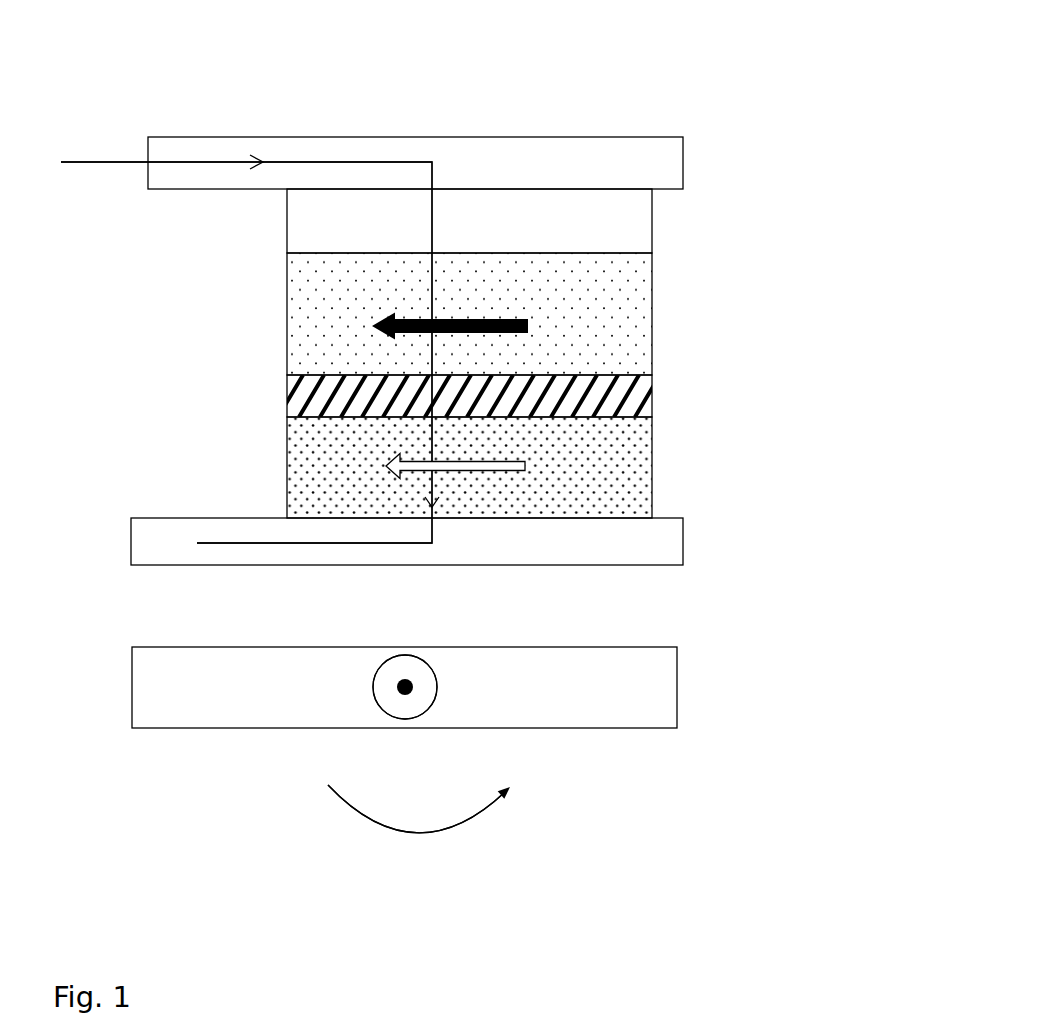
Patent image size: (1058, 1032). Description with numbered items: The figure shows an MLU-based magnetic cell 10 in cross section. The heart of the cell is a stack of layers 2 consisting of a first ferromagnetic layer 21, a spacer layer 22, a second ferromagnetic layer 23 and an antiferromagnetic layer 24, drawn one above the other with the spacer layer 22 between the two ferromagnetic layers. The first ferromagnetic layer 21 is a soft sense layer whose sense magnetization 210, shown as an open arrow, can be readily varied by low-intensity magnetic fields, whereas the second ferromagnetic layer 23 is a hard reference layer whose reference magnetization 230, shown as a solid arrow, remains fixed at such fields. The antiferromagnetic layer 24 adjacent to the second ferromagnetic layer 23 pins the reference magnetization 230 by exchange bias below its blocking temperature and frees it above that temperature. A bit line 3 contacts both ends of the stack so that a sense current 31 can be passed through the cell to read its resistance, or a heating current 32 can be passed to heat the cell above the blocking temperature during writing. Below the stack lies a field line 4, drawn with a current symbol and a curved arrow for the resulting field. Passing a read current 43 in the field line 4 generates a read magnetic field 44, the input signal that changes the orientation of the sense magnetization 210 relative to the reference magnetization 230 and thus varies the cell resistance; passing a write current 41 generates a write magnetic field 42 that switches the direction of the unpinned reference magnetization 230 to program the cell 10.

The MLU-based magnetic cell 10 is at (812, 71).
The bit line 3 is at (571, 155).
The sense current 31 is at (102, 162).
The heating current 32 is at (246, 352).
The magnetic tunnel junction stack 2 is at (561, 353).
The antiferromagnetic layer 24 is at (643, 224).
The second ferromagnetic layer 23 is at (534, 314).
The reference magnetization 230 is at (450, 308).
The spacer layer 22 is at (643, 394).
The first ferromagnetic layer 21 is at (534, 467).
The sense magnetization 210 is at (455, 452).
The field line 4 is at (670, 690).
The write current 41 is at (437, 697).
The read current 43 is at (405, 687).
The write magnetic field 42 is at (436, 828).
The read magnetic field 44 is at (416, 809).